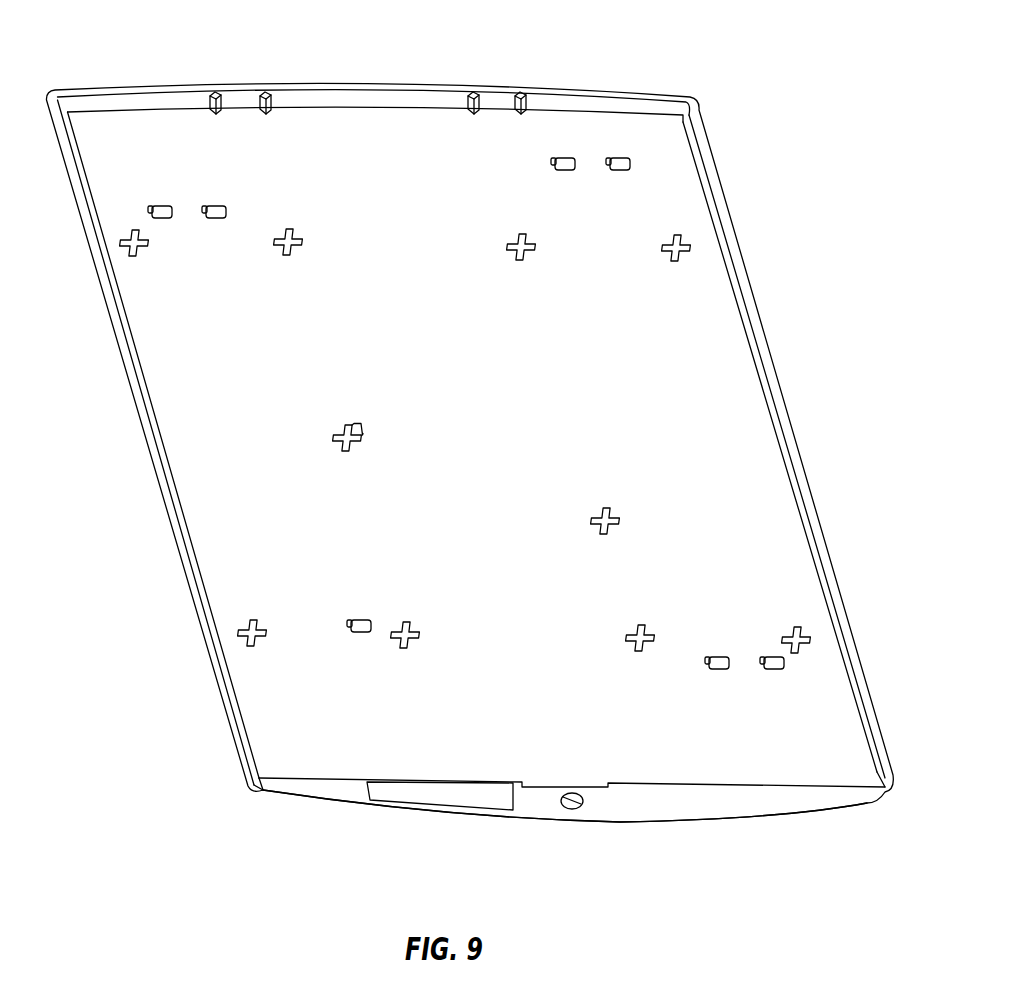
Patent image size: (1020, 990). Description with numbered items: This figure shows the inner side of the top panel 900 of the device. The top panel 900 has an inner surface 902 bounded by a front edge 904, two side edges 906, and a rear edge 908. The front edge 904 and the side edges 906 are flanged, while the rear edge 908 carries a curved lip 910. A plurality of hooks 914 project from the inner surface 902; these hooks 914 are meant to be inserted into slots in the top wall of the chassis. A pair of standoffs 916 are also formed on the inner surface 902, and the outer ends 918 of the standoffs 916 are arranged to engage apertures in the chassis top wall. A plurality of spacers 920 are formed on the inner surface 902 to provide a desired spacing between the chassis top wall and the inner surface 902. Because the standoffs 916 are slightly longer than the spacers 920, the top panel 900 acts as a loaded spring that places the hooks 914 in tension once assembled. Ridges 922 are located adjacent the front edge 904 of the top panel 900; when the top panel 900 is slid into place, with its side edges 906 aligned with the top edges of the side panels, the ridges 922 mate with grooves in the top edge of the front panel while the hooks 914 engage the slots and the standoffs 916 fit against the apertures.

The top panel 900 is at (733, 64).
The inner surface 902 is at (661, 383).
The front edge 904 is at (374, 121).
The side edges 906 is at (472, 445).
The rear edge 908 is at (572, 777).
The curved lip 910 is at (565, 822).
The hooks 914 is at (466, 413).
The standoffs 916 is at (498, 455).
The outer ends 918 is at (384, 419).
The spacers 920 is at (523, 655).
The ridges 922 is at (368, 76).